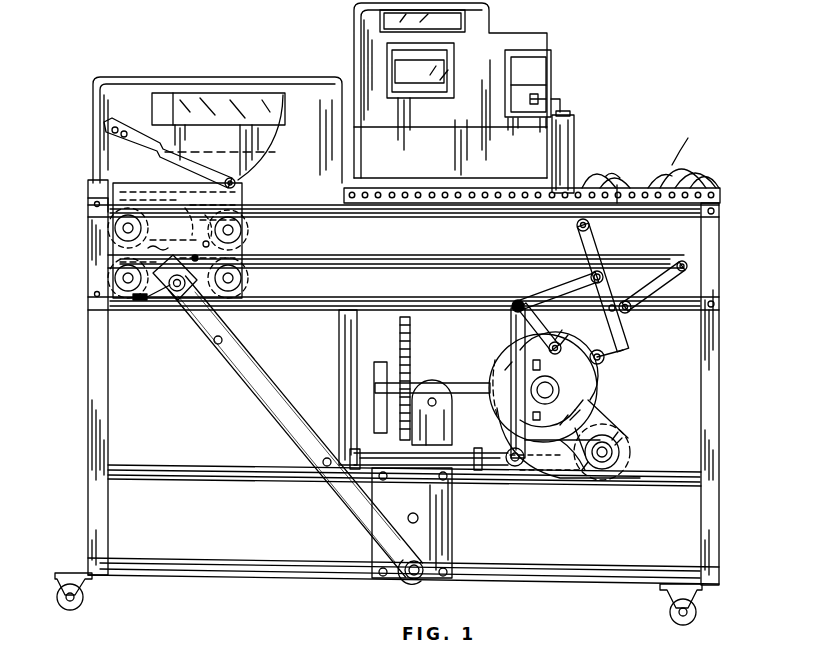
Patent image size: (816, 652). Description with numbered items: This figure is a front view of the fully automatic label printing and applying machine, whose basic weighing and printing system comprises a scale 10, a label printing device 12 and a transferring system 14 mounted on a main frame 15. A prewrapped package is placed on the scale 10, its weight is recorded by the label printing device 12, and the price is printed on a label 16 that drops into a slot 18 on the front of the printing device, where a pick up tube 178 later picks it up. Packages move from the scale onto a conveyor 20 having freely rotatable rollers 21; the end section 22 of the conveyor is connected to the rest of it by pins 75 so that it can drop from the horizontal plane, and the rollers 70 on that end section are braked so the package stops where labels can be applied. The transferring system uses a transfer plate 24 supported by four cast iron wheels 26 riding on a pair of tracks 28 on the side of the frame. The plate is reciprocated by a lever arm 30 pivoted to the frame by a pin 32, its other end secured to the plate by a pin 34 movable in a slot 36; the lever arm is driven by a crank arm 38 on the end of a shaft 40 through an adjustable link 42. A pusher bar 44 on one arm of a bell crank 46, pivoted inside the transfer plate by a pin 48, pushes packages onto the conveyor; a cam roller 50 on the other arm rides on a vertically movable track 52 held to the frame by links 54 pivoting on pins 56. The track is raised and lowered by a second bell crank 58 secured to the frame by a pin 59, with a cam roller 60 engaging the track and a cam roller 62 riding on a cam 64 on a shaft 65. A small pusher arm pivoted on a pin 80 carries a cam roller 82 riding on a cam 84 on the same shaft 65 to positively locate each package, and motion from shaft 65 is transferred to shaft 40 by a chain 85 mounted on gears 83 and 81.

The scale 10 is at (215, 70).
The label printing device 12 is at (494, 33).
The transferring system 14 is at (70, 320).
The main frame 15 is at (720, 392).
The label 16 is at (545, 96).
The slot 18 is at (518, 60).
The conveyor 20 is at (585, 175).
The rollers 21 is at (676, 189).
The end section 22 is at (620, 205).
The transfer plate 24 is at (177, 240).
The wheels 26 is at (113, 228).
The tracks 28 is at (394, 218).
The lever arm 30 is at (268, 432).
The pin 32 is at (405, 578).
The pin 34 is at (178, 298).
The slot 36 is at (216, 343).
The crank arm 38 is at (558, 462).
The shaft 40 is at (612, 455).
The adjustable link 42 is at (462, 461).
The pusher bar 44 is at (103, 125).
The bell crank 46 is at (204, 168).
The pin 48 is at (283, 95).
The cam roller 50 is at (195, 225).
The vertically movable track 52 is at (412, 255).
The links 54 is at (660, 292).
The pins 56 is at (630, 315).
The second bell crank 58 is at (560, 294).
The pin 59 is at (512, 308).
The cam roller 60 is at (615, 272).
The cam roller 62 is at (559, 346).
The cam 64 is at (509, 350).
The shaft 65 is at (554, 390).
The rollers 70 is at (603, 173).
The pins 75 is at (578, 223).
The pin 80 is at (618, 307).
The gear 81 is at (576, 373).
The cam roller 82 is at (604, 358).
The gear 83 is at (640, 442).
The cam 84 is at (490, 383).
The chain 85 is at (600, 425).
The pick up tube 178 is at (562, 100).